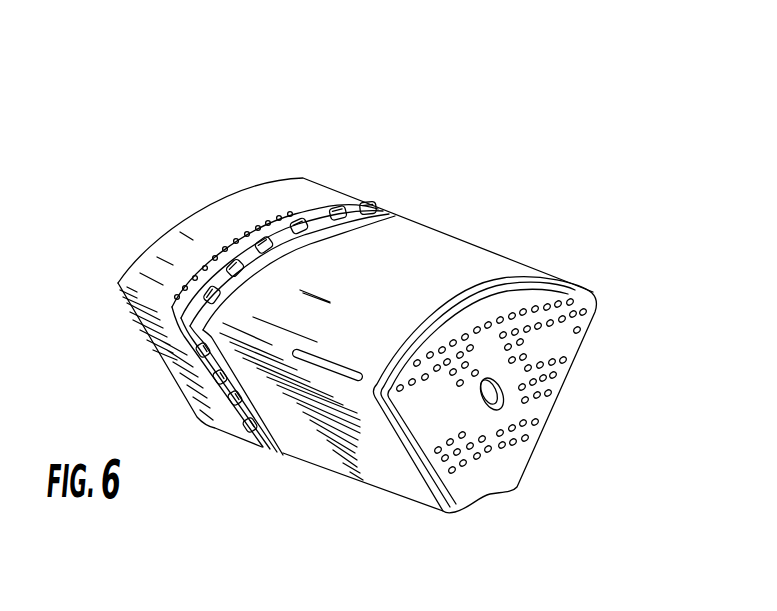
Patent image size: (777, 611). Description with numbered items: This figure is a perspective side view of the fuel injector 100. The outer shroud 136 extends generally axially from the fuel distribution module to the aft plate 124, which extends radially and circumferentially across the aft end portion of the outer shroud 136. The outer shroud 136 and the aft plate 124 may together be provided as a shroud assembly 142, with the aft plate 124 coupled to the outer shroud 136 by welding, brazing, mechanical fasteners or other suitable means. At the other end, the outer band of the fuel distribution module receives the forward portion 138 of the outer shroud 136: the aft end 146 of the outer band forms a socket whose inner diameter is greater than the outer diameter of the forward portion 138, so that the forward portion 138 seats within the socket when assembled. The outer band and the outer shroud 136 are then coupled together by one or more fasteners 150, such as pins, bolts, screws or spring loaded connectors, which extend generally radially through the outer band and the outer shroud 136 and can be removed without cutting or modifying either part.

The fuel injector 100 is at (395, 86).
The aft plate 124 is at (560, 293).
The outer shroud 136 is at (443, 260).
The forward portion 138 is at (357, 232).
The shroud assembly 142 is at (367, 506).
The aft end 146 is at (338, 186).
The fasteners 150 is at (345, 200).